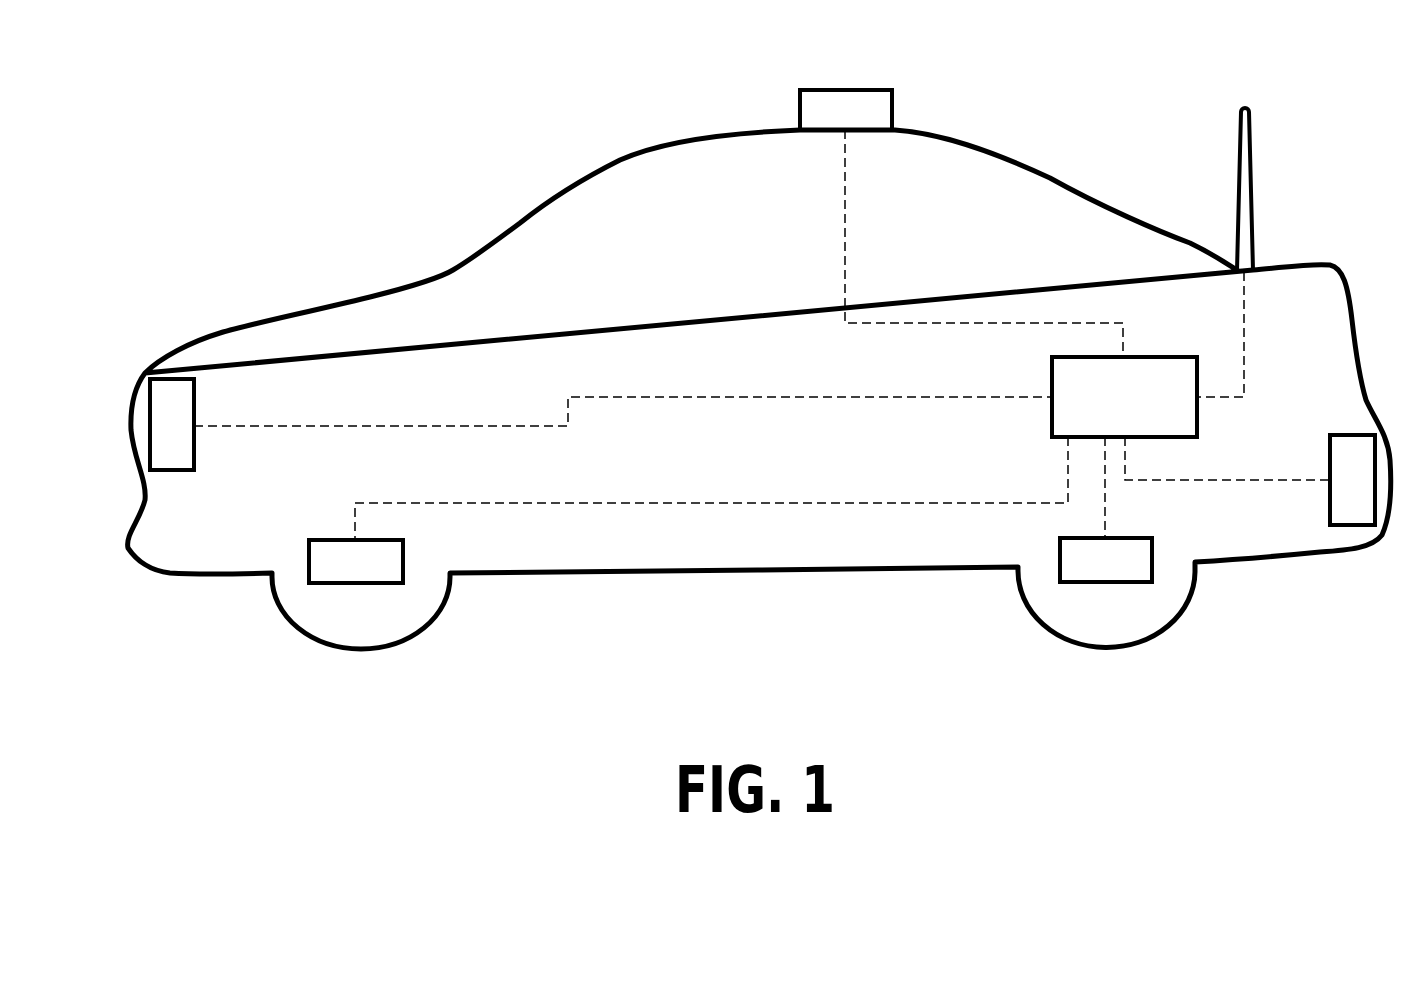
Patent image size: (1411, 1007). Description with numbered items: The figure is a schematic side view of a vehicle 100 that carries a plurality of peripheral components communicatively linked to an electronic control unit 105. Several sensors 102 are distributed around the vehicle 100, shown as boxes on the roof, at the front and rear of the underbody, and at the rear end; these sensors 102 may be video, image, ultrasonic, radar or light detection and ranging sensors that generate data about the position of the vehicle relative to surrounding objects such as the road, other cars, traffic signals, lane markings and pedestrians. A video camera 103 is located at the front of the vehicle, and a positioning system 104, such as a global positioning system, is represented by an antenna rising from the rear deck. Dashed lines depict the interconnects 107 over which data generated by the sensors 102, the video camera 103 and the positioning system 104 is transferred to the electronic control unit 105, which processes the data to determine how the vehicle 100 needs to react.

The vehicle 100 is at (358, 120).
The sensors 102 is at (890, 88).
The video camera 103 is at (196, 380).
The positioning system 104 is at (1253, 143).
The electronic control unit 105 is at (1152, 357).
The communication bus 107 is at (845, 500).